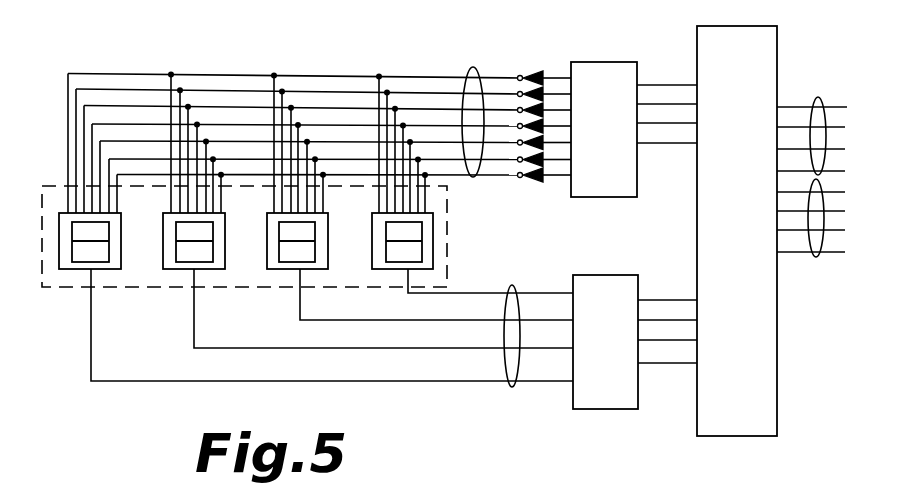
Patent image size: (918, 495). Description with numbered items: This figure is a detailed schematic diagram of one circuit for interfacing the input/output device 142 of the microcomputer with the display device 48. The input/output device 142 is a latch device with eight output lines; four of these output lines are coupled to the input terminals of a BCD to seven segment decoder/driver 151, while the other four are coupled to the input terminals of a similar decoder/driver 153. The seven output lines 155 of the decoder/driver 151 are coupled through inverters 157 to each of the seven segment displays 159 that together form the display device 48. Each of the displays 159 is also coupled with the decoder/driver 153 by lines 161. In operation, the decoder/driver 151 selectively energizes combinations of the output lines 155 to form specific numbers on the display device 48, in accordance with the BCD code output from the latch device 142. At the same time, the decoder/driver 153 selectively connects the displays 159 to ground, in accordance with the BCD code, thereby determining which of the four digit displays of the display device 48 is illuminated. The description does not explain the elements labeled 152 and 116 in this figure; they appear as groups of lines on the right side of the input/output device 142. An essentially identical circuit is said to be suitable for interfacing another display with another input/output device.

The display device 48 is at (447, 239).
The I/O data lines 116 is at (815, 257).
The input/output device 142 is at (760, 241).
The decoder/driver 151 is at (608, 62).
The I/O control lines 152 is at (819, 97).
The decoder/driver 153 is at (605, 409).
The output lines 155 is at (473, 67).
The inverters 157 is at (530, 58).
The seven segment displays 159 is at (70, 263).
The lines 161 is at (511, 387).